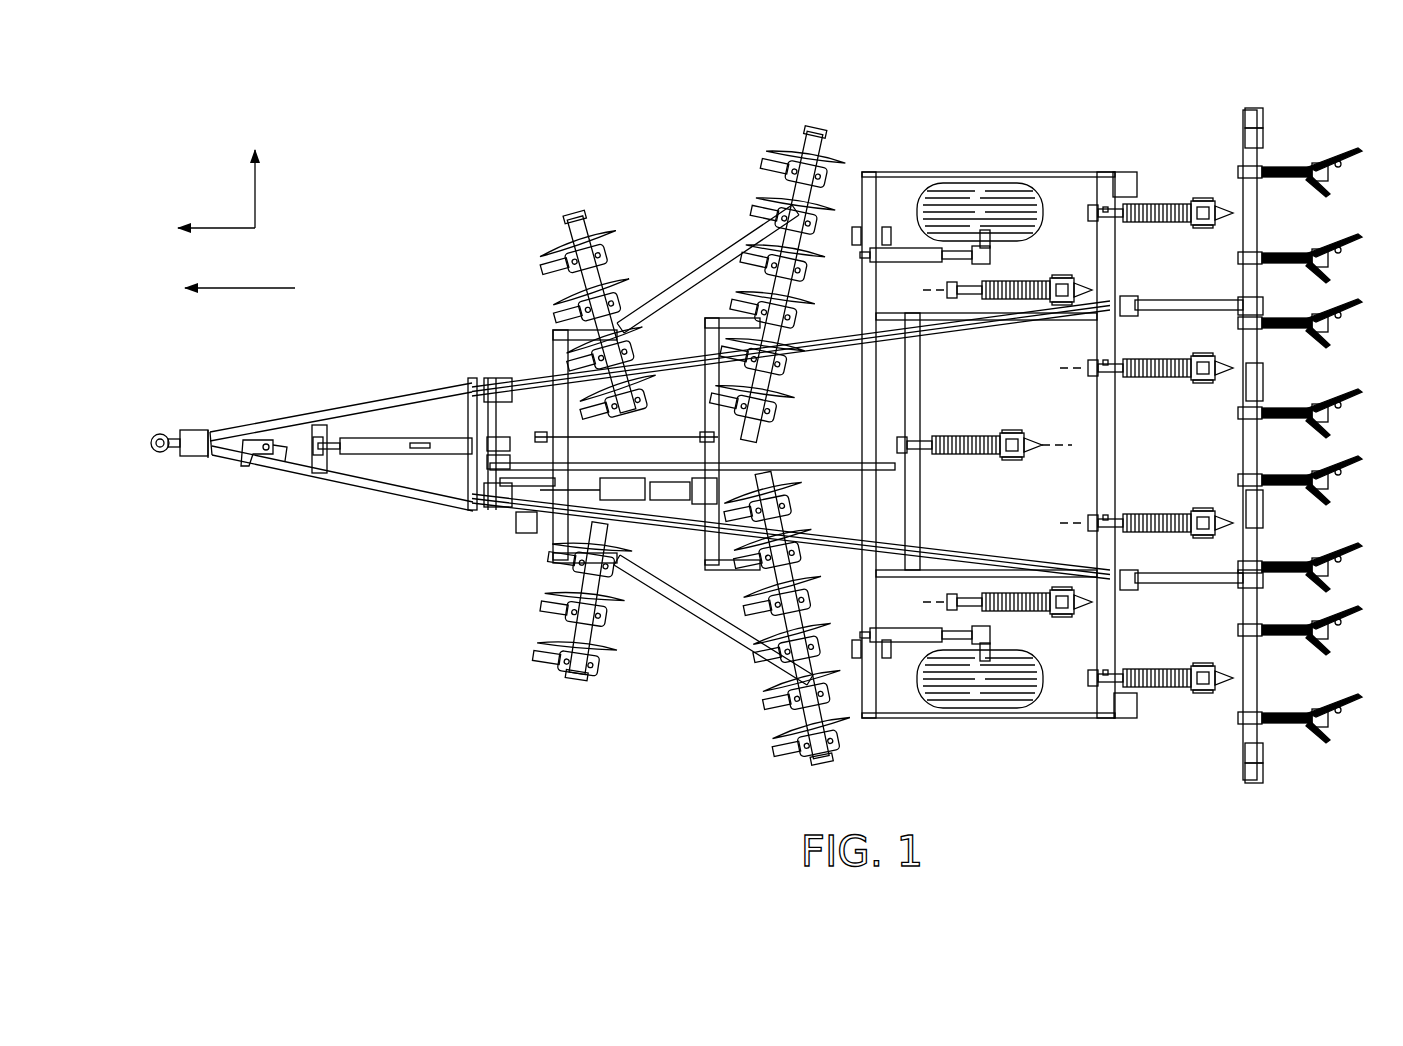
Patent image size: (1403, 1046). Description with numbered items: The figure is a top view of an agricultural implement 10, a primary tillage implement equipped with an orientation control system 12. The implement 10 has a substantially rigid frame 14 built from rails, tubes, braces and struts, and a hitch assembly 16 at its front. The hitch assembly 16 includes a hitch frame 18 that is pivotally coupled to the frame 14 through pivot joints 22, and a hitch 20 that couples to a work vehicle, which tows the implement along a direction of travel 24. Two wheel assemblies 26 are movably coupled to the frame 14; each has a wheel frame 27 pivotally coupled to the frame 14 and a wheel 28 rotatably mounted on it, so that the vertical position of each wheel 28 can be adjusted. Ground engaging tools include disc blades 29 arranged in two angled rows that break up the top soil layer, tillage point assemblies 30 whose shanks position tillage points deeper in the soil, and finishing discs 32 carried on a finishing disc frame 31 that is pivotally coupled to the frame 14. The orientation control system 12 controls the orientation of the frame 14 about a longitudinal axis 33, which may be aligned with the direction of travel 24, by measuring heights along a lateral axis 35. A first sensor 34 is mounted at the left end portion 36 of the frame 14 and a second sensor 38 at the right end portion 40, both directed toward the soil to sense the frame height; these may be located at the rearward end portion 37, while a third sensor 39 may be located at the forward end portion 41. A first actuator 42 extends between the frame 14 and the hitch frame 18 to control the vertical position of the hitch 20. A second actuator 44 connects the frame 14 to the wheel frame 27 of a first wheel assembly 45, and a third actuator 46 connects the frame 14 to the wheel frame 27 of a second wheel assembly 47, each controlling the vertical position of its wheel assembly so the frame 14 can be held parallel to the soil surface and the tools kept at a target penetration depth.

The agricultural implement 10 is at (450, 243).
The orientation control system 12 is at (417, 337).
The frame 14 is at (670, 520).
The hitch assembly 16 is at (277, 408).
The hitch frame 18 is at (305, 412).
The hitch 20 is at (153, 428).
The pivot joint 22 is at (490, 363).
The direction of travel 24 is at (230, 288).
The wheel assembly 26 is at (1034, 450).
The wheel frame 27 is at (982, 257).
The wheel 28 is at (955, 210).
The disc blade 29 is at (525, 650).
The tillage point assembly 30 is at (1075, 200).
The finishing disc frame 31 is at (1248, 458).
The finishing disc 32 is at (1298, 752).
The longitudinal axis 33 is at (221, 228).
The first sensor 34 is at (1127, 718).
The lateral axis 35 is at (258, 197).
The left end portion 36 is at (1035, 765).
The rearward end portion 37 is at (1050, 545).
The second sensor 38 is at (1128, 172).
The third sensor 39 is at (518, 538).
The right end portion 40 is at (1033, 100).
The forward end portion 41 is at (474, 531).
The first actuator 42 is at (367, 440).
The second actuator 44 is at (909, 640).
The first wheel assembly 45 is at (965, 770).
The third actuator 46 is at (912, 255).
The second wheel assembly 47 is at (938, 152).